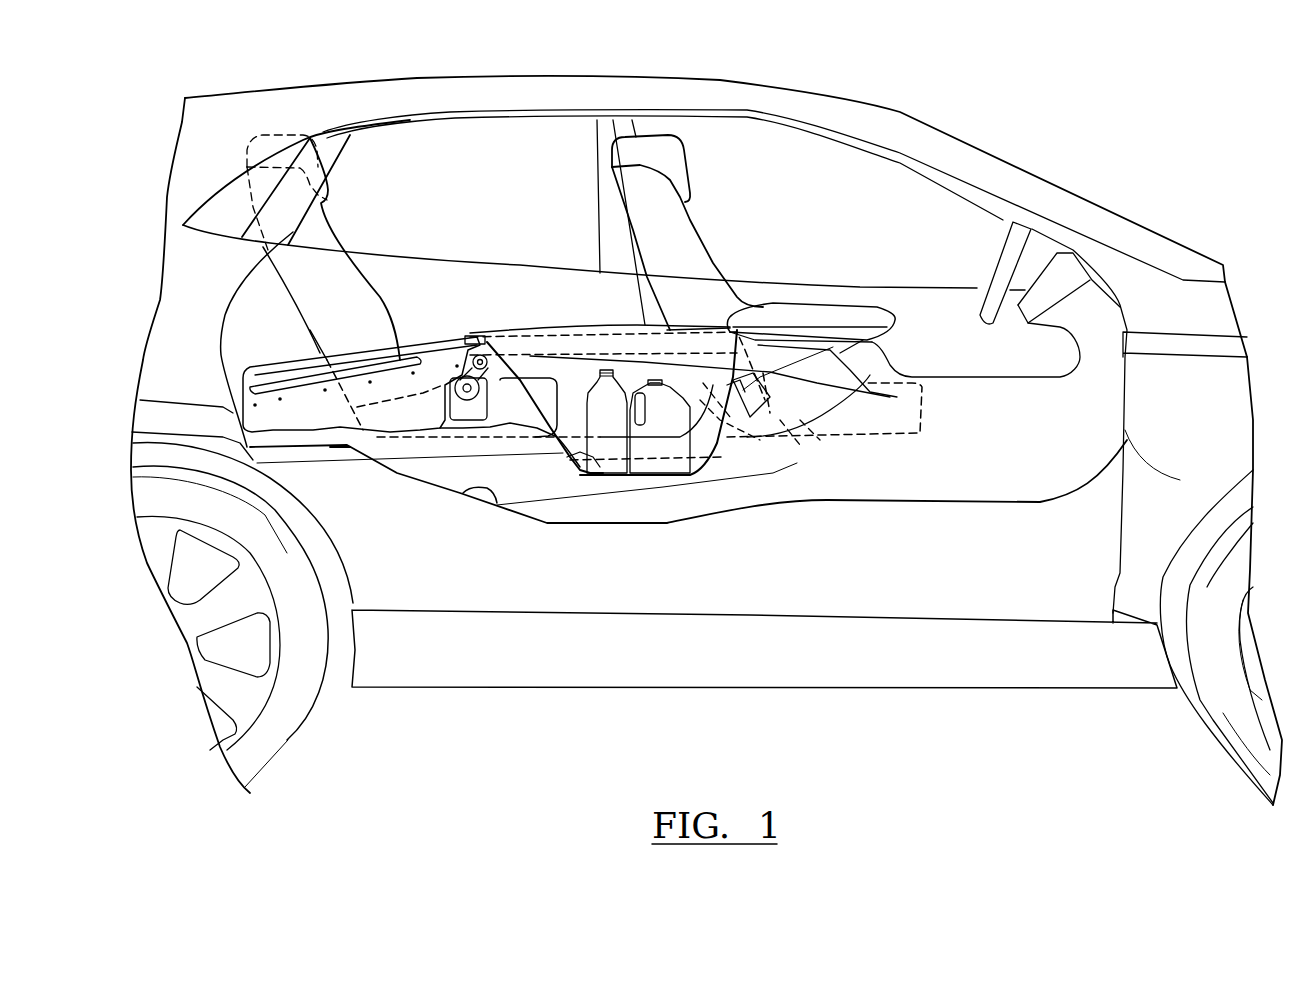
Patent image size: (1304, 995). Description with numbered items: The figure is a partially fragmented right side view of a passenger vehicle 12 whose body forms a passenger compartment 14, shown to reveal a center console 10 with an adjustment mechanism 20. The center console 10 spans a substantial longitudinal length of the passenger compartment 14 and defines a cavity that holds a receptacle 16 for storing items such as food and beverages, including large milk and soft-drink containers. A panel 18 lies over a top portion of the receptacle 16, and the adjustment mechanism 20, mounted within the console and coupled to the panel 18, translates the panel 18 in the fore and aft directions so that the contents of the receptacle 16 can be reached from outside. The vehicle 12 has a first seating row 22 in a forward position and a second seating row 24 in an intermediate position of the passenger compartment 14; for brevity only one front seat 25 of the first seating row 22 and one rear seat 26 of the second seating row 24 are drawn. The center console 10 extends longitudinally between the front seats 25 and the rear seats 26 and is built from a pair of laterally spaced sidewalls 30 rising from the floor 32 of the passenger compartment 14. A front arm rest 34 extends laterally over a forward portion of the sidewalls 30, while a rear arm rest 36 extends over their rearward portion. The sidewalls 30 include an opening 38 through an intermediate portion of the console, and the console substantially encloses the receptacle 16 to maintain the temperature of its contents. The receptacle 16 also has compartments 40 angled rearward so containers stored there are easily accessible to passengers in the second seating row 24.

The center console 10 is at (597, 327).
The vehicle 12 is at (928, 117).
The passenger compartment 14 is at (583, 175).
The receptacle 16 is at (583, 430).
The panel 18 is at (555, 330).
The adjustment mechanism 20 is at (415, 352).
The first seating row 22 is at (710, 206).
The second seating row 24 is at (347, 206).
The front seat 25 is at (693, 227).
The rear seat 26 is at (333, 225).
The sidewalls 30 is at (412, 455).
The floor 32 is at (497, 503).
The front arm rest 34 is at (850, 300).
The rear arm rest 36 is at (290, 363).
The opening 38 is at (538, 375).
The compartments 40 is at (810, 450).